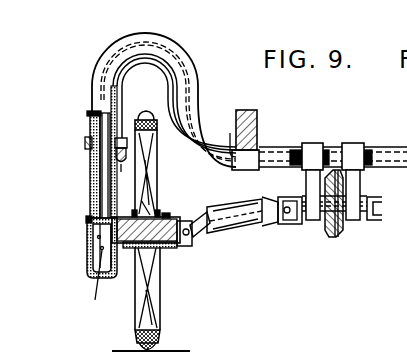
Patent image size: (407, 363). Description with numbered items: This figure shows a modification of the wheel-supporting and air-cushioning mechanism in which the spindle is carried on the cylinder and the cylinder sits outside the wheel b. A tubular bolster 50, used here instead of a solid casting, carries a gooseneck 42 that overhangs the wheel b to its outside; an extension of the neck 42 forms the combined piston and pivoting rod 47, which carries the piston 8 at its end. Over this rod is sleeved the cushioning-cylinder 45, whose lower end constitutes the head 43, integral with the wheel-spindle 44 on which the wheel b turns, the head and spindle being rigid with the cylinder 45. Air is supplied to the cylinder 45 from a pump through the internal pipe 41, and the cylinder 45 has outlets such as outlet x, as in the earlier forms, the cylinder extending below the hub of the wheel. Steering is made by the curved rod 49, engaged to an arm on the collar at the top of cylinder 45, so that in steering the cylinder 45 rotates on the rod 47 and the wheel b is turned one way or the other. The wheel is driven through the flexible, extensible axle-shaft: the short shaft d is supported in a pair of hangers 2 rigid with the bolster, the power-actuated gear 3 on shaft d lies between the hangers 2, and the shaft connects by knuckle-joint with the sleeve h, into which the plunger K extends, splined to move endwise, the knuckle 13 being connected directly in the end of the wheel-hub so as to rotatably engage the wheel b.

The gooseneck 42 is at (184, 36).
The internal pipe 41 is at (229, 146).
The combined piston and pivoting rod 47 is at (87, 151).
The curved rod 49 is at (166, 82).
The wheel-spindle 44 is at (166, 212).
The piston 8 is at (88, 219).
The head 43 is at (87, 254).
The cushioning-cylinder 45 is at (92, 277).
The knuckle 13 is at (205, 226).
The tubular bolster 50 is at (386, 147).
The hanger 2 is at (363, 182).
The power-actuated gear 3 is at (335, 240).
The plunger K is at (205, 208).
The outlet x is at (82, 233).
The sleeve h is at (238, 232).
The short shaft d is at (294, 226).
The wheel b is at (160, 347).